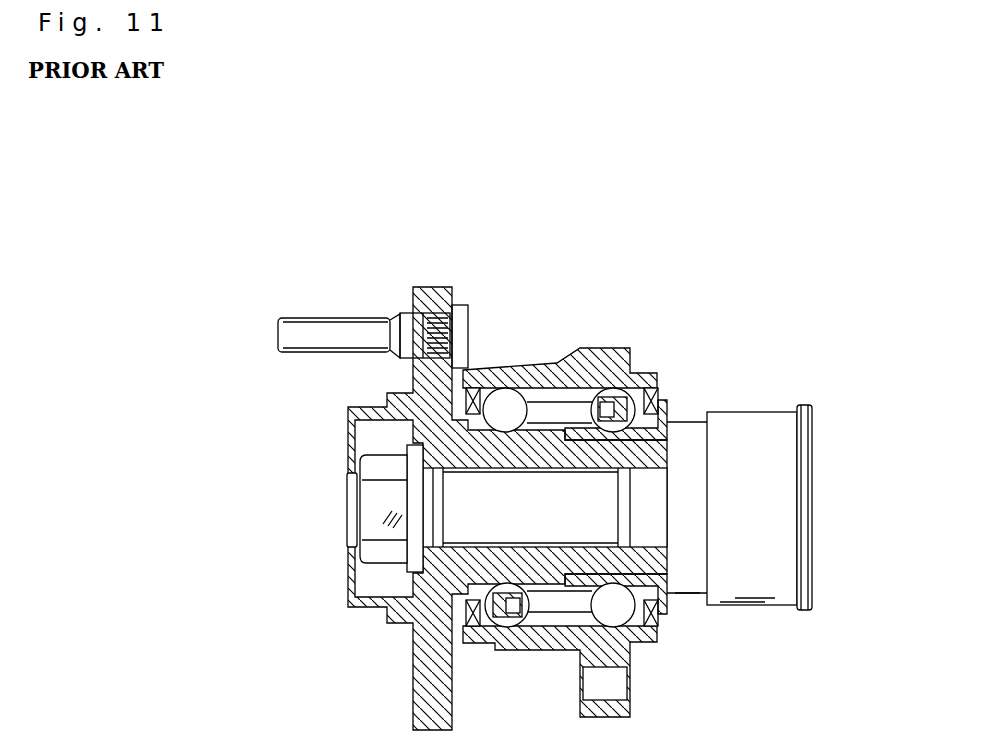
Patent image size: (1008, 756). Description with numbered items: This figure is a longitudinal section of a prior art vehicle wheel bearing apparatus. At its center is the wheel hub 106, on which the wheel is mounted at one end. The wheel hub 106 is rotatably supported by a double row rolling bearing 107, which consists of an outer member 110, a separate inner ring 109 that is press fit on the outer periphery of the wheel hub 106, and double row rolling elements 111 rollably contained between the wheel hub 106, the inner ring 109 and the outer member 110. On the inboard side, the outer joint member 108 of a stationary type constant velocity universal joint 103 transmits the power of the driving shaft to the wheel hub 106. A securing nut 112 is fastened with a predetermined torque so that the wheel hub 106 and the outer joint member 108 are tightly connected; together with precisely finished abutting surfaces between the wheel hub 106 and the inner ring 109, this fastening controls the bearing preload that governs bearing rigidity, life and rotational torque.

The stationary type constant velocity universal joint 103 is at (783, 472).
The wheel hub 106 is at (401, 393).
The double row rolling bearing 107 is at (606, 487).
The outer joint member 108 is at (696, 460).
The inner ring 109 is at (668, 414).
The outer member 110 is at (569, 363).
The double row rolling elements 111 is at (603, 617).
The securing nut 112 is at (375, 555).